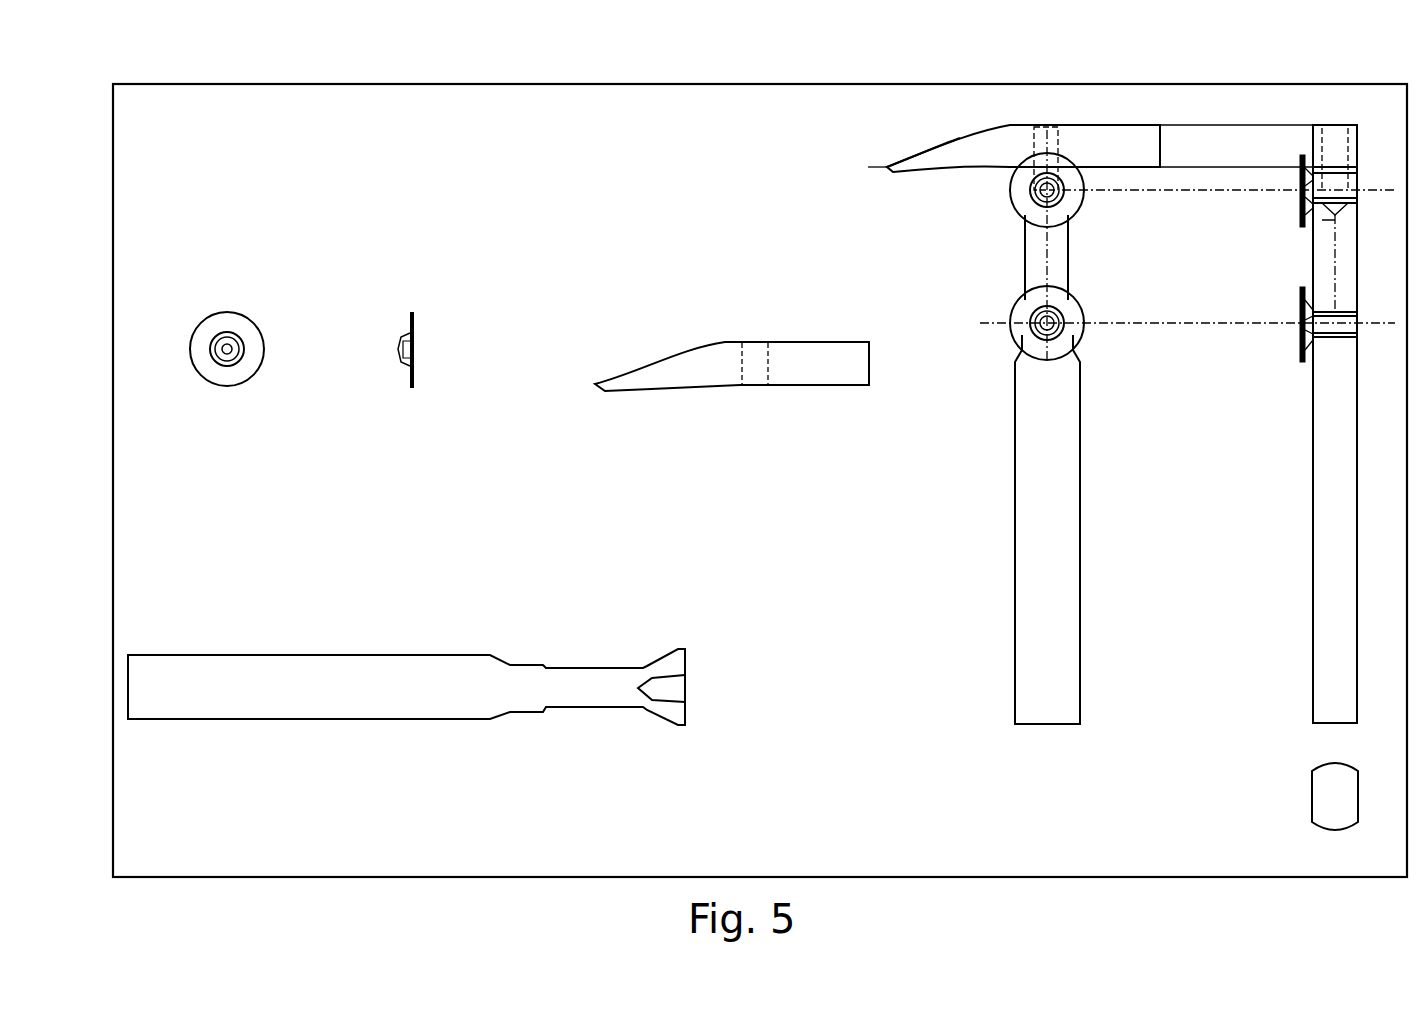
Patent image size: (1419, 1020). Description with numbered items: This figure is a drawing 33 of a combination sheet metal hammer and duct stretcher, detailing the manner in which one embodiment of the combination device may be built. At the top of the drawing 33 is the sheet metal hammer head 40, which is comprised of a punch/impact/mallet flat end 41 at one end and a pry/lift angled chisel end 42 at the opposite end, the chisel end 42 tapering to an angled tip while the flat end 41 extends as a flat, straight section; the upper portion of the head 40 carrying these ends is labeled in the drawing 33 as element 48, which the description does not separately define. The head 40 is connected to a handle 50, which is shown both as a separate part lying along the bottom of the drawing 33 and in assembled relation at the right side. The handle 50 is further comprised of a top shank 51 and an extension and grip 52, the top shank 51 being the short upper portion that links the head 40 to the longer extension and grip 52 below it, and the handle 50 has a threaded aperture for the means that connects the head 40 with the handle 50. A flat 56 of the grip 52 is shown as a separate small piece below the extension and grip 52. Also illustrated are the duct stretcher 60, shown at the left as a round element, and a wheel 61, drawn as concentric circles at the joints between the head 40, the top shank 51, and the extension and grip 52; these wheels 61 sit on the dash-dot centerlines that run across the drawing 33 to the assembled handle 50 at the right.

The drawing 33 is at (1066, 896).
The sheet metal hammer head 40 is at (800, 434).
The punch/impact/mallet flat end 41 is at (1163, 150).
The pry/lift angled chisel end 42 is at (905, 160).
The blade 48 is at (1092, 123).
The handle 50 is at (299, 769).
The top shank 51 is at (1020, 262).
The extension and grip 52 is at (1037, 595).
The flat 56 is at (1333, 796).
The duct stretcher 60 is at (239, 395).
The wheel 61 is at (1010, 185).